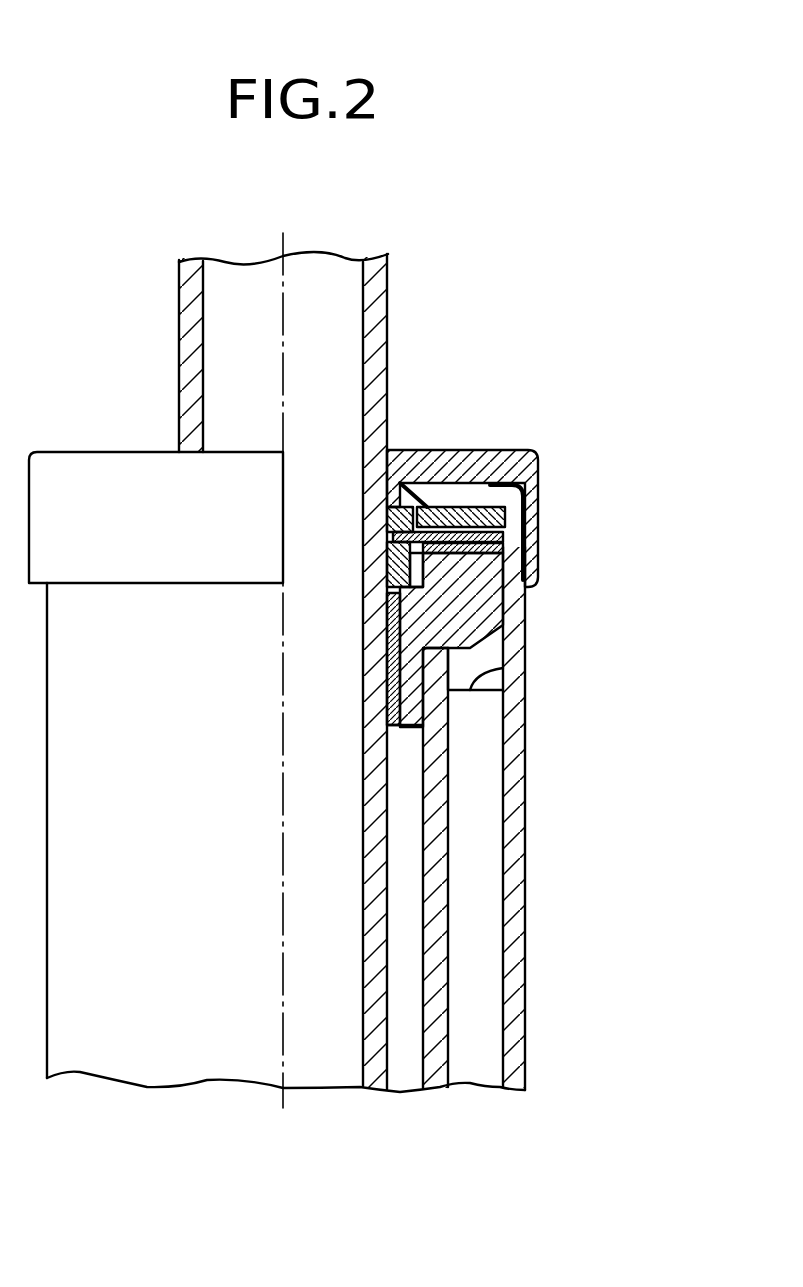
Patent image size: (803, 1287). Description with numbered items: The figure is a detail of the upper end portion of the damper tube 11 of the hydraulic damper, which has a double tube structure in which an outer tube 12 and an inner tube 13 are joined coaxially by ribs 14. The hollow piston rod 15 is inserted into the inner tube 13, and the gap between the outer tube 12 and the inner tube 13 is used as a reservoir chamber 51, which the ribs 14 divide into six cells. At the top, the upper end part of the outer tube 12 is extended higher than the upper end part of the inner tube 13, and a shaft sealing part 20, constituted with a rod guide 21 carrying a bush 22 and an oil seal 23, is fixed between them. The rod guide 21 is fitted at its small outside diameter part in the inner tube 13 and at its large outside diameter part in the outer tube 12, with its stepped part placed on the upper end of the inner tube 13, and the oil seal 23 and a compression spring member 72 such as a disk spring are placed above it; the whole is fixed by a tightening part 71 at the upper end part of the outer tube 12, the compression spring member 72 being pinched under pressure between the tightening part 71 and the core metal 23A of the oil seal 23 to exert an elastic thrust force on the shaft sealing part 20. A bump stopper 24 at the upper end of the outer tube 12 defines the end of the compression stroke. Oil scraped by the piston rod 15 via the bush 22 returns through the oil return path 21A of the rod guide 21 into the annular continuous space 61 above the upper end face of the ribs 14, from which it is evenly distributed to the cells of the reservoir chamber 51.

The damper tube 11 is at (562, 845).
The outer tube 12 is at (525, 977).
The inner tube 13 is at (450, 1043).
The ribs 14 is at (472, 1018).
The piston rod 15 is at (387, 293).
The shaft sealing part 20 is at (378, 613).
The rod guide 21 is at (472, 598).
The oil return path 21A is at (490, 547).
The bush 22 is at (385, 667).
The oil seal 23 is at (388, 553).
The core metal 23A is at (490, 550).
The bump stopper 24 is at (431, 450).
The reservoir chamber 51 is at (475, 872).
The annular continuous space 61 is at (470, 640).
The tightening part 71 is at (505, 450).
The compression spring member 72 is at (465, 450).